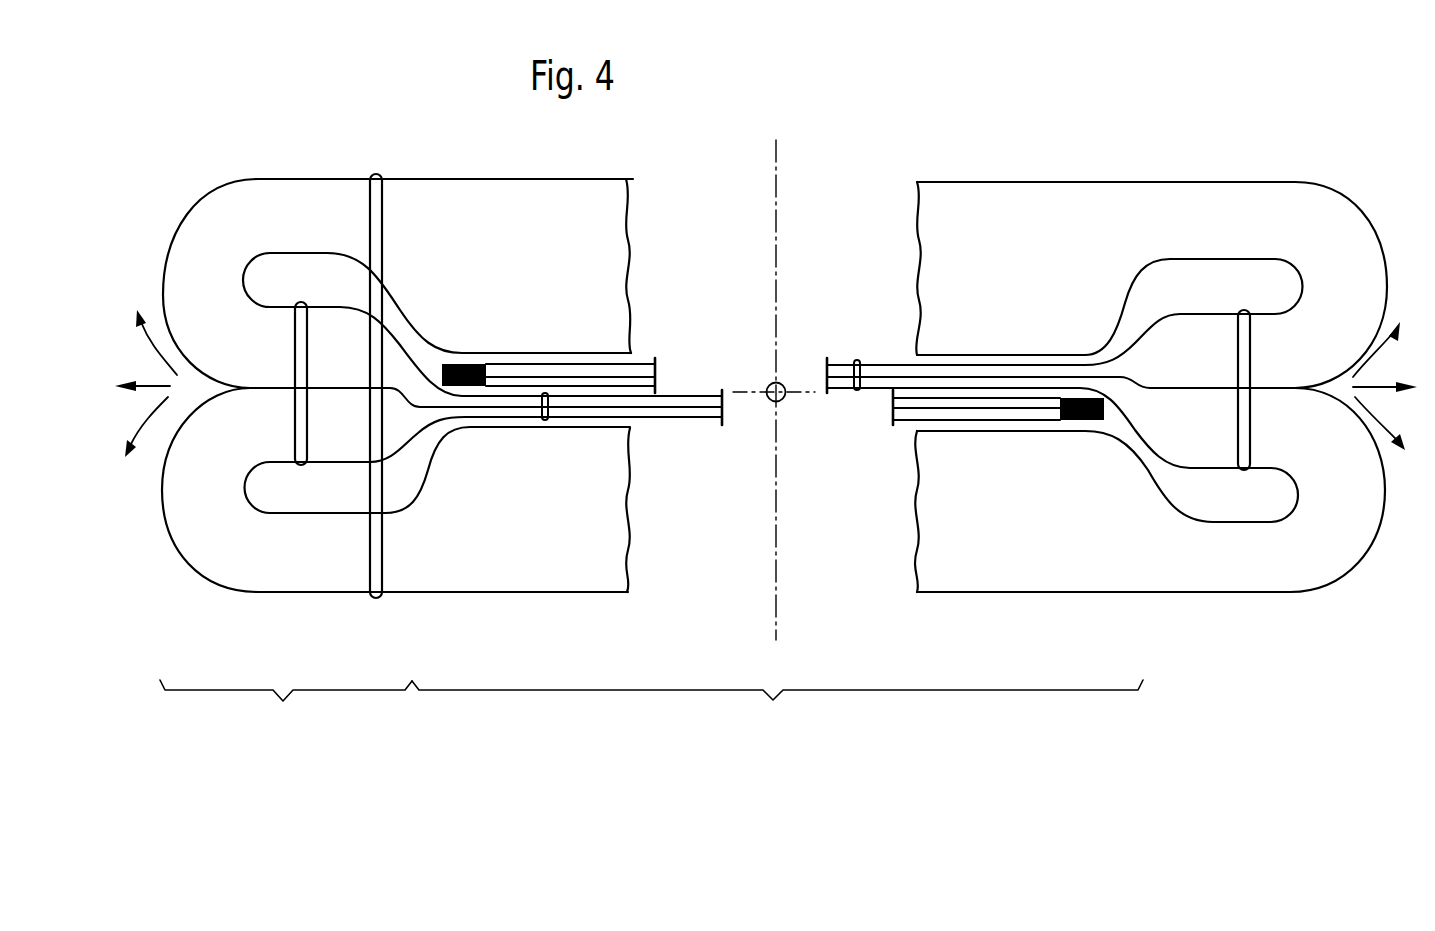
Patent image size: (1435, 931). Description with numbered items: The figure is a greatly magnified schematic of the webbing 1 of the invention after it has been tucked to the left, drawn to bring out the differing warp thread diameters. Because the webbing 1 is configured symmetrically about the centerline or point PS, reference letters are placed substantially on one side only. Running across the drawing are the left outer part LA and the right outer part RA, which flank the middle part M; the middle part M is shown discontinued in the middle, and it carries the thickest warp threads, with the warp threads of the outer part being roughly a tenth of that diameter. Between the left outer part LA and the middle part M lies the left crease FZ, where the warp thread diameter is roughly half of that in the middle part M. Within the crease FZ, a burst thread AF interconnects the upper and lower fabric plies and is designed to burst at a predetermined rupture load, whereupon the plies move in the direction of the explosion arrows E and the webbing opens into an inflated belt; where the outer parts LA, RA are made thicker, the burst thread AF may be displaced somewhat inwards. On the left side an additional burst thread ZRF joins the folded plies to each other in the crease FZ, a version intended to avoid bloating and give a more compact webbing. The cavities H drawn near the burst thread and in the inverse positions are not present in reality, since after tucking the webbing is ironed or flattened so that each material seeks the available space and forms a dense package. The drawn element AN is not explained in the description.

The webbing 1 is at (1073, 153).
The additional burst thread ZRF is at (379, 175).
The cavities H is at (308, 292).
The burst thread AF is at (296, 418).
The explosion arrows E is at (155, 387).
The centerline or point PS is at (770, 384).
The stop ring AN is at (862, 368).
The right outer part RA is at (443, 313).
The left outer part LA is at (1108, 465).
The left crease FZ is at (286, 709).
The middle part M is at (777, 709).